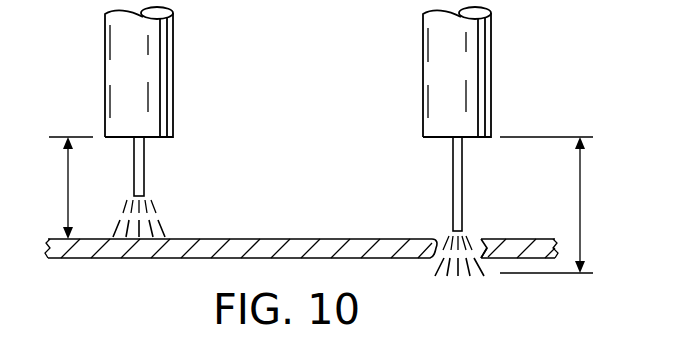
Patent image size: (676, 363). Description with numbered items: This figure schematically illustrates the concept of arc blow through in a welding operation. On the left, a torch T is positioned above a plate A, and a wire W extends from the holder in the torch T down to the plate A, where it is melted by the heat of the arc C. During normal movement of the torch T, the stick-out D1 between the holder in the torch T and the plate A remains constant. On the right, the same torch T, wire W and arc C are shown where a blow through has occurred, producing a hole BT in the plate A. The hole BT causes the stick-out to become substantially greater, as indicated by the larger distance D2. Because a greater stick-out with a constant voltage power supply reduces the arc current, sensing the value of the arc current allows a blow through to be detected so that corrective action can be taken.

The torch T is at (180, 64).
The wire W is at (142, 172).
The arc C is at (155, 222).
The plate A is at (301, 232).
The stick-out D1 is at (60, 188).
The stick-out during blow through D2 is at (562, 205).
The hole BT is at (484, 260).